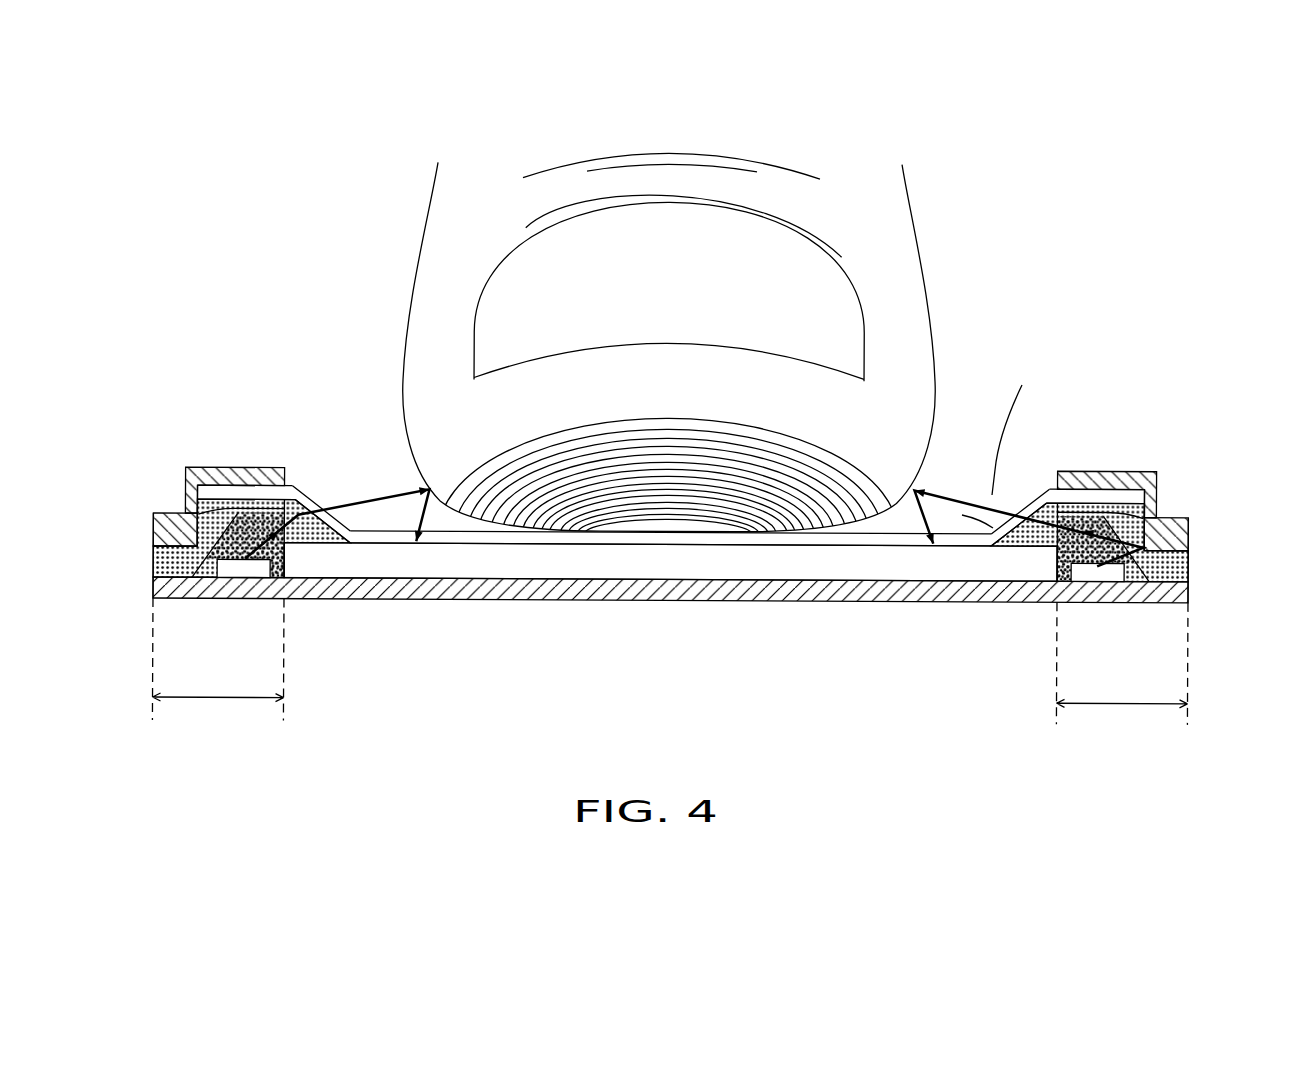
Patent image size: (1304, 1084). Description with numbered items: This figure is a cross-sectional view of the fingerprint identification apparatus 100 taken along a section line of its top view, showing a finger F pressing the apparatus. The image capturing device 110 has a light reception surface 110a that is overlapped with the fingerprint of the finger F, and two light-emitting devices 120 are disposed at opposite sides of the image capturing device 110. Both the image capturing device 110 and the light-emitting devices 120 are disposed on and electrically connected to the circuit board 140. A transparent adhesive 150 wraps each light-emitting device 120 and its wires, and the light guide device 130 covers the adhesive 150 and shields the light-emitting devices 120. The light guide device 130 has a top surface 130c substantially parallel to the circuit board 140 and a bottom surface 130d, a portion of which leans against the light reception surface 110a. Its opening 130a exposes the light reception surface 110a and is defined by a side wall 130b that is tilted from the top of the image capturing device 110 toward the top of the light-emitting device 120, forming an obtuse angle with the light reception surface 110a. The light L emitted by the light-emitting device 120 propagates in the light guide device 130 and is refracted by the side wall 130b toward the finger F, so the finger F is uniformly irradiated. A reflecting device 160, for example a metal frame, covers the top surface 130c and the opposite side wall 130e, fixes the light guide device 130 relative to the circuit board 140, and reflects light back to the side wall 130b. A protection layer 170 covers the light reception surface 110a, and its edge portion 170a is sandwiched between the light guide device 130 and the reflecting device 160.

The fingerprint identification apparatus 100 is at (1293, 767).
The image capturing device 110 is at (862, 562).
The light reception surface 110a is at (908, 548).
The light-emitting device 120 is at (245, 568).
The light guide device 130 is at (157, 566).
The opening 130a is at (982, 465).
The side wall 130b is at (308, 495).
The top surface 130c is at (224, 489).
The bottom surface 130d is at (326, 550).
The side wall 130e is at (189, 506).
The circuit board 140 is at (1182, 588).
The adhesive 150 is at (210, 572).
The reflecting device 160 is at (157, 523).
The protection layer 170 is at (355, 492).
The edge portion 170a is at (196, 513).
The finger F is at (890, 243).
The light L is at (388, 494).